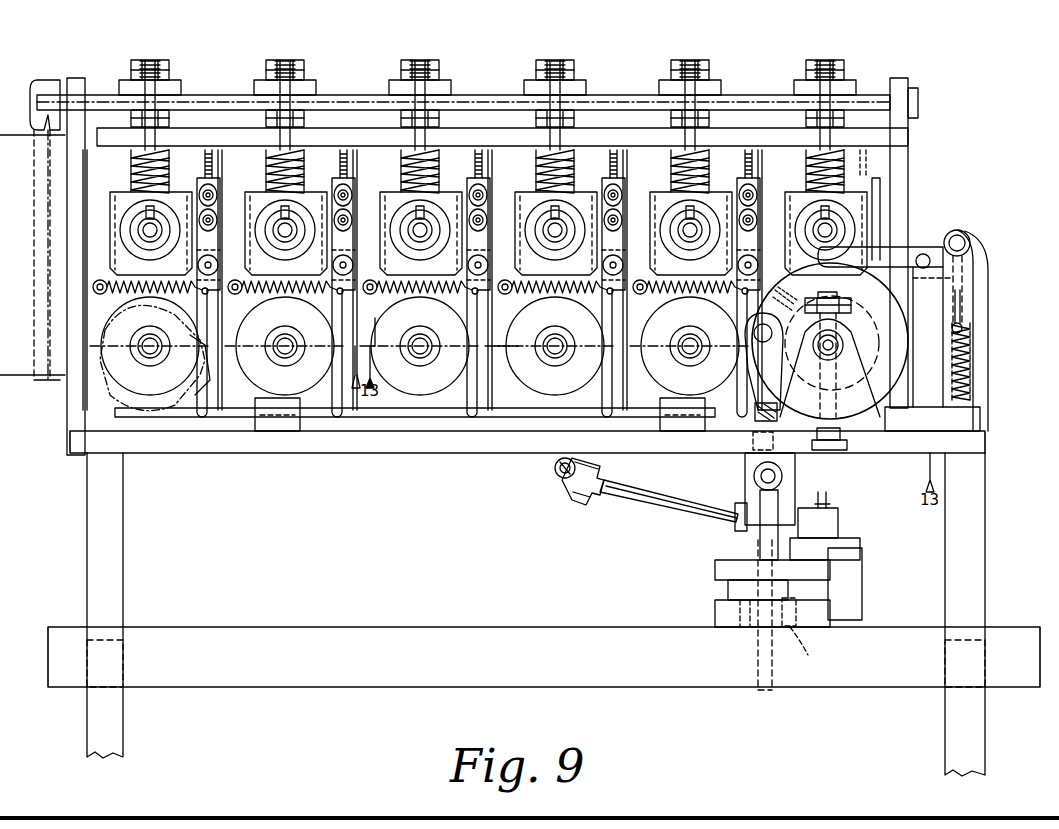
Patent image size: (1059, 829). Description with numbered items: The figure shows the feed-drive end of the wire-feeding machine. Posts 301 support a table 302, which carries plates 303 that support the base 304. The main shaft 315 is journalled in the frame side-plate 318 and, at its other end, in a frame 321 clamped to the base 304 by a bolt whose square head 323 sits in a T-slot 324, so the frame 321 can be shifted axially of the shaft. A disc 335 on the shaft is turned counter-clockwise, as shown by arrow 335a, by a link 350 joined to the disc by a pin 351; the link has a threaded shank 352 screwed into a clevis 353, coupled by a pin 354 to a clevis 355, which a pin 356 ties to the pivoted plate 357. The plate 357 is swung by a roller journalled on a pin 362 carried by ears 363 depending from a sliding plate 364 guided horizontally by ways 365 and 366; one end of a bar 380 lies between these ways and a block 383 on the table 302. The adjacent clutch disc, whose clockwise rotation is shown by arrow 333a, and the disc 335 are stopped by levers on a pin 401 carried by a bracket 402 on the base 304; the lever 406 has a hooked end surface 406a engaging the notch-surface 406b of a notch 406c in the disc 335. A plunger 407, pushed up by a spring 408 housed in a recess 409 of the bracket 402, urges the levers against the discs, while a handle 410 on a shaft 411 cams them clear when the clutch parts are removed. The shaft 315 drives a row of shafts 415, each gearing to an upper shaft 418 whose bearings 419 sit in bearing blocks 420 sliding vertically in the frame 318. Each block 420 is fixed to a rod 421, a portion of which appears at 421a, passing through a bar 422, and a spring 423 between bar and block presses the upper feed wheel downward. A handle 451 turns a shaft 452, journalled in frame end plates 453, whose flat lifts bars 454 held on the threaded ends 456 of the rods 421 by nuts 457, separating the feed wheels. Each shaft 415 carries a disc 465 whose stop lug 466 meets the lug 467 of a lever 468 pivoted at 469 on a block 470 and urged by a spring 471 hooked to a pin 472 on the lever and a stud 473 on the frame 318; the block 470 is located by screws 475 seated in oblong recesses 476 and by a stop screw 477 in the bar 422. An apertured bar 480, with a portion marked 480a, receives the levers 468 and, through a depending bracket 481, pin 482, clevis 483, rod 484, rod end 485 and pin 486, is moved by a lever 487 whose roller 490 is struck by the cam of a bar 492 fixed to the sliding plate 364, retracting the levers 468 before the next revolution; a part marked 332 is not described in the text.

The posts 301 is at (123, 726).
The table 302 is at (190, 640).
The plates 303 is at (87, 560).
The base 304 is at (85, 445).
The shaft 315 is at (822, 362).
The frame side-plate 318 is at (160, 258).
The frame 321 is at (880, 424).
The square head 323 is at (847, 444).
The T-slot 324 is at (780, 442).
The arm 332 is at (750, 327).
The arrow 333a is at (883, 392).
The disc 335 is at (895, 357).
The arrow 335a is at (913, 328).
The link 350 is at (748, 355).
The pin 351 is at (752, 330).
The threaded shank 352 is at (740, 420).
The clevis 353 is at (745, 460).
The pin 354 is at (782, 476).
The clevis 355 is at (780, 500).
The pin 356 is at (735, 517).
The plate 357 is at (758, 562).
The pin 362 is at (788, 626).
The ears 363 is at (745, 635).
The sliding plate 364 is at (730, 590).
The way 365 is at (715, 580).
The way 366 is at (862, 578).
The bar 380 is at (718, 608).
The block 383 is at (718, 620).
The pin 401 is at (925, 253).
The bracket 402 is at (988, 325).
The lever 406 is at (890, 250).
The hooked end surface 406a is at (824, 258).
The notch-surface 406b is at (826, 296).
The notch 406c is at (830, 272).
The plunger 407 is at (968, 255).
The spring 408 is at (972, 355).
The recess 409 is at (972, 372).
The handle 410 is at (963, 325).
The shaft 411 is at (962, 232).
The shafts 415 is at (418, 358).
The shaft 418 is at (160, 252).
The bearings 419 is at (150, 230).
The bearing blocks 420 is at (145, 210).
The rod 421 is at (150, 142).
The bar portion 421a is at (185, 106).
The bar 422 is at (368, 130).
The springs 423 is at (160, 142).
The handle 451 is at (45, 80).
The shaft 452 is at (100, 95).
The frame end plates 453 is at (908, 163).
The bars 454 is at (180, 88).
The upper threaded ends 456 is at (160, 50).
The nuts 457 is at (168, 72).
The disc 465 is at (420, 395).
The stop lug 466 is at (470, 348).
The lug 467 is at (470, 358).
The lever 468 is at (480, 410).
The pivot 469 is at (480, 262).
The block 470 is at (540, 140).
The spring 471 is at (422, 293).
The pin 472 is at (478, 292).
The stud 473 is at (370, 294).
The screws 475 is at (478, 220).
The counterbored oblong recess 476 is at (478, 190).
The stop screw 477 is at (478, 220).
The bar 480 is at (128, 410).
The block 480a is at (270, 420).
The depending bracket 481 is at (508, 418).
The pin 482 is at (563, 478).
The clevis 483 is at (598, 488).
The rod 484 is at (648, 492).
The rod end 485 is at (820, 531).
The pin 486 is at (826, 508).
The lever 487 is at (895, 562).
The roller 490 is at (860, 548).
The bar 492 is at (765, 558).